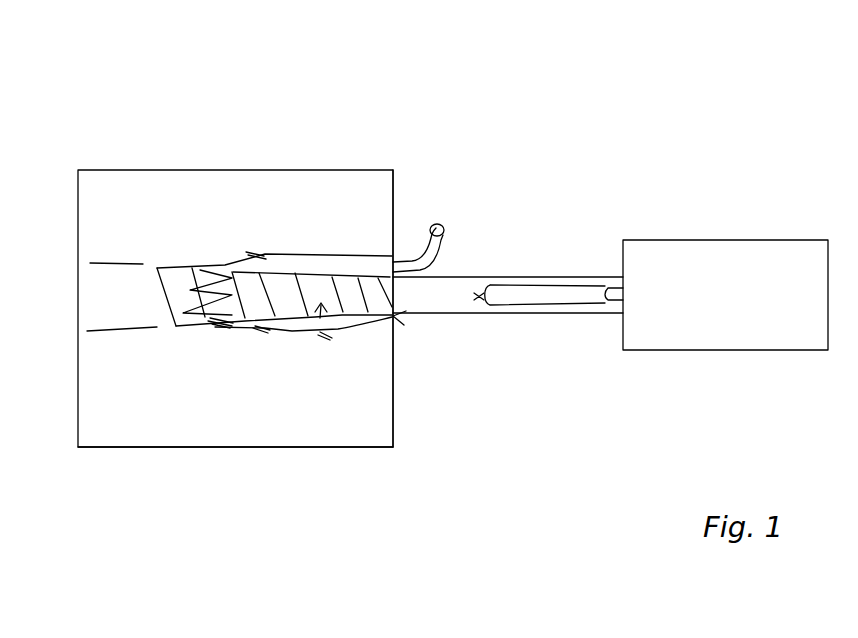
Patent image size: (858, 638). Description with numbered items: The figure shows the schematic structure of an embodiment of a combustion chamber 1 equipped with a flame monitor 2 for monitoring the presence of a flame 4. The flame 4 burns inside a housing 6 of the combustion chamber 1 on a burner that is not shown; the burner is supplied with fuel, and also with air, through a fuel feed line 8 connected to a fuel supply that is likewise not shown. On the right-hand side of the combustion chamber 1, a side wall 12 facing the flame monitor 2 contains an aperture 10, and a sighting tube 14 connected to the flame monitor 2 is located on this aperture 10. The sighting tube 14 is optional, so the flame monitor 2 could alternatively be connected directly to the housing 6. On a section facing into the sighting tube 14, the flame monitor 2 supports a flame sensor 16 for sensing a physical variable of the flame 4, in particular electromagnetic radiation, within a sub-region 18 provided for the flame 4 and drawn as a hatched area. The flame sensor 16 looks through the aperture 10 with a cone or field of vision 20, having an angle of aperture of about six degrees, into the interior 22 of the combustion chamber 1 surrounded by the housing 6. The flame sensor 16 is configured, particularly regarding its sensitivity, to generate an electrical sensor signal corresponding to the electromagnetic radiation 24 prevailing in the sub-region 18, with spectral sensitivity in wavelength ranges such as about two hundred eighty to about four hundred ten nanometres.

The combustion chamber 1 is at (270, 86).
The flame monitor 2 is at (722, 255).
The flame 4 is at (362, 334).
The housing 6 is at (270, 448).
The fuel feed line 8 is at (444, 241).
The aperture 10 is at (396, 318).
The side wall 12 is at (395, 433).
The sighting tube 14 is at (532, 315).
The flame sensor 16 is at (621, 278).
The sub-region 18 is at (322, 283).
The field of vision 20 is at (578, 315).
The interior 22 is at (118, 425).
The electromagnetic radiation 24 is at (320, 318).